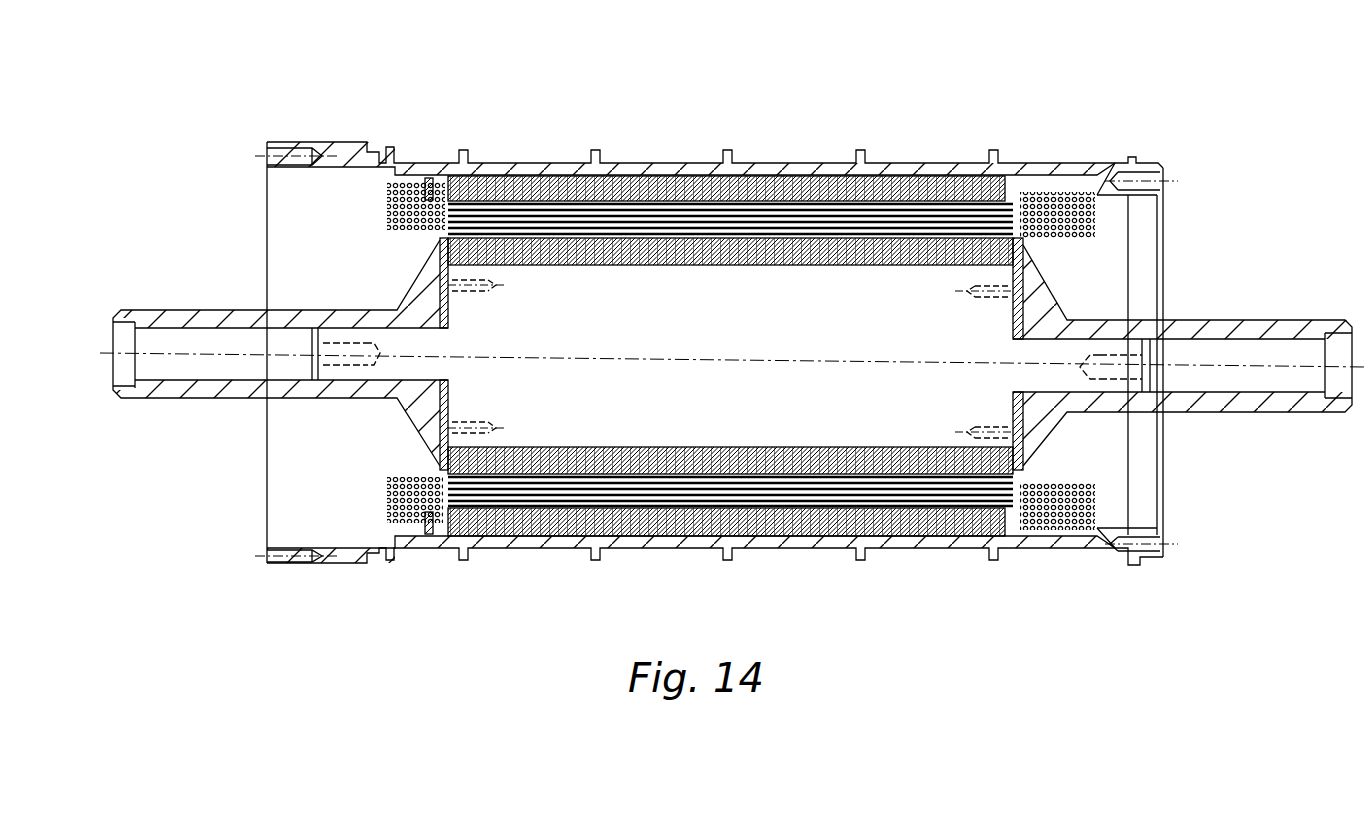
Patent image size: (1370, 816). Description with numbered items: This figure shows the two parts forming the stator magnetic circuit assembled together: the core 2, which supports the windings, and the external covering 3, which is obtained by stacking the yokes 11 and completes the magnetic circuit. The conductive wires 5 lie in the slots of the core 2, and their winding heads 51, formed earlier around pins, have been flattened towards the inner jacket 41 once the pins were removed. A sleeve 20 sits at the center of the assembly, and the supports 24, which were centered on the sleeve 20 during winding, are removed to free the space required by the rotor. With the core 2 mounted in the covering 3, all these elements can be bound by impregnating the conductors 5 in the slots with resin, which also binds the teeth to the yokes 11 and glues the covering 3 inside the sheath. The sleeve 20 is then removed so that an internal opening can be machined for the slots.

The core 2 is at (1095, 440).
The covering 3 is at (1183, 172).
The conductive wires 5 is at (543, 219).
The yokes 11 is at (648, 177).
The sleeve 20 is at (502, 388).
The supports 24 is at (175, 323).
The inner jacket 41 is at (790, 170).
The winding heads 51 is at (398, 181).